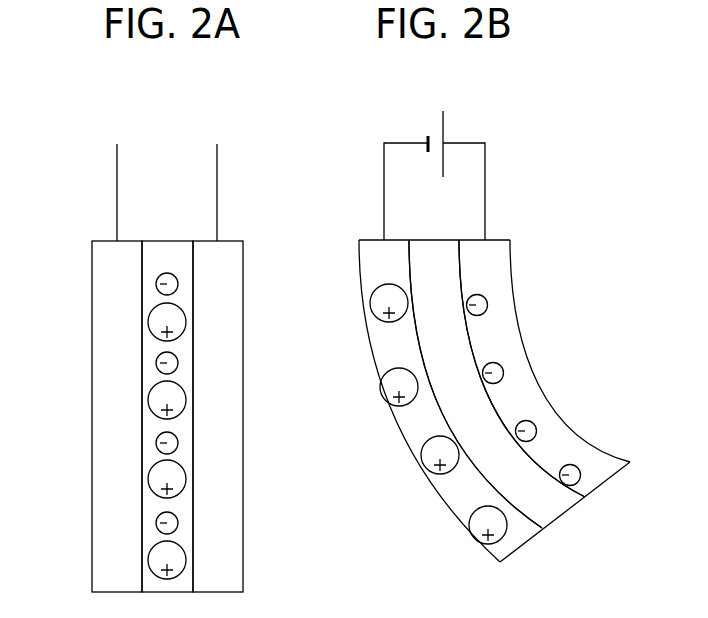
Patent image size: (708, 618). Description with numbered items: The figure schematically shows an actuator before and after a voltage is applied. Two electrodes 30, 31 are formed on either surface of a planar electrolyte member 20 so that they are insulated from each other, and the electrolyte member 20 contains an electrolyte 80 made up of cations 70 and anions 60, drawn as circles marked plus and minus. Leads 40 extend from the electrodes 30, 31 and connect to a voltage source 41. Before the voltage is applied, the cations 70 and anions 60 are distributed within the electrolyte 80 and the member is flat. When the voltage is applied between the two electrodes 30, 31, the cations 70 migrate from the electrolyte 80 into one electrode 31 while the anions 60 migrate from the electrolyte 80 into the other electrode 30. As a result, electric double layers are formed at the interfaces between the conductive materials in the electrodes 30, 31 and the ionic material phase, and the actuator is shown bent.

In FIG. 2A, the planar electrolyte member 20 is at (147, 443).
In FIG. 2B, the planar electrolyte member 20 is at (457, 347).
In FIG. 2A, the electrode 30 is at (108, 310).
In FIG. 2B, the electrode 30 is at (401, 263).
In FIG. 2A, the electrode 31 is at (222, 338).
In FIG. 2B, the electrode 31 is at (520, 380).
In FIG. 2A, the lead wire 40 is at (217, 180).
In FIG. 2B, the power supply 41 is at (435, 132).
In FIG. 2A, the anions 60 is at (177, 522).
In FIG. 2B, the anions 60 is at (493, 384).
In FIG. 2A, the cations 70 is at (187, 560).
In FIG. 2B, the cations 70 is at (469, 524).
In FIG. 2A, the electrolyte 80 is at (272, 432).
In FIG. 2B, the electrolyte 80 is at (459, 443).